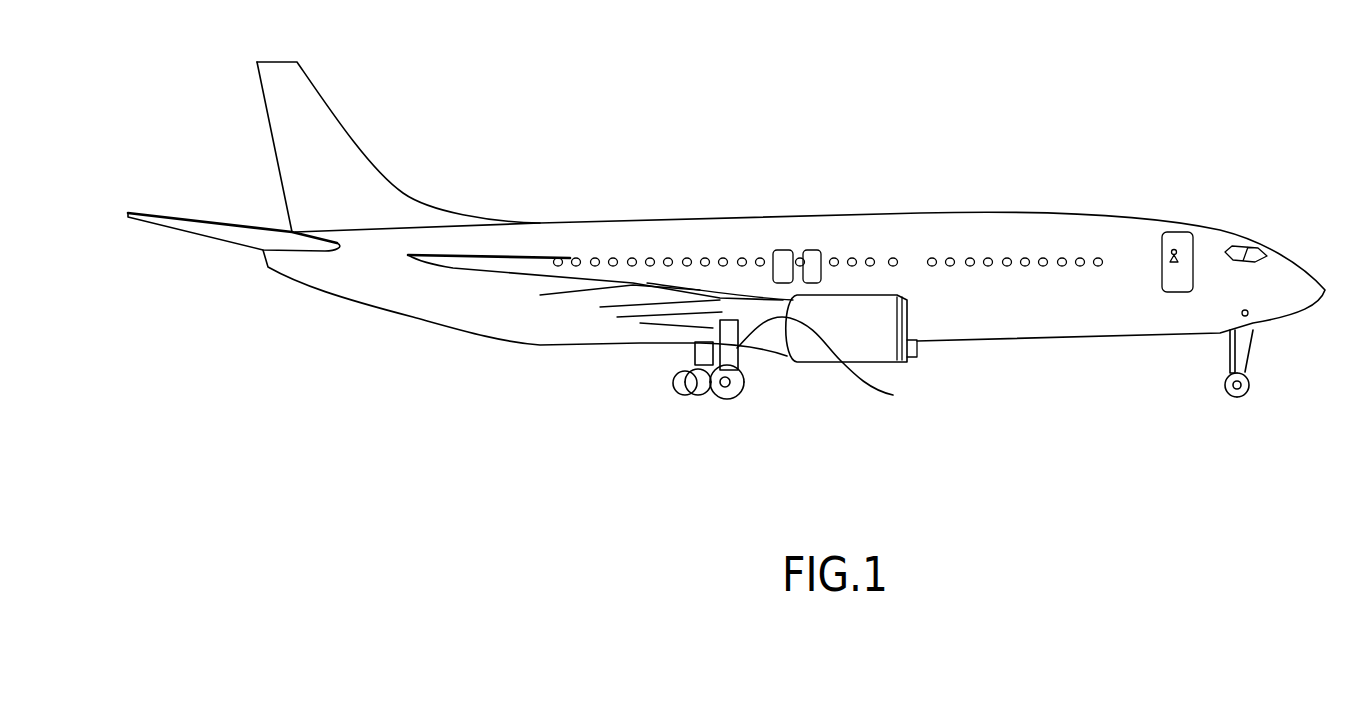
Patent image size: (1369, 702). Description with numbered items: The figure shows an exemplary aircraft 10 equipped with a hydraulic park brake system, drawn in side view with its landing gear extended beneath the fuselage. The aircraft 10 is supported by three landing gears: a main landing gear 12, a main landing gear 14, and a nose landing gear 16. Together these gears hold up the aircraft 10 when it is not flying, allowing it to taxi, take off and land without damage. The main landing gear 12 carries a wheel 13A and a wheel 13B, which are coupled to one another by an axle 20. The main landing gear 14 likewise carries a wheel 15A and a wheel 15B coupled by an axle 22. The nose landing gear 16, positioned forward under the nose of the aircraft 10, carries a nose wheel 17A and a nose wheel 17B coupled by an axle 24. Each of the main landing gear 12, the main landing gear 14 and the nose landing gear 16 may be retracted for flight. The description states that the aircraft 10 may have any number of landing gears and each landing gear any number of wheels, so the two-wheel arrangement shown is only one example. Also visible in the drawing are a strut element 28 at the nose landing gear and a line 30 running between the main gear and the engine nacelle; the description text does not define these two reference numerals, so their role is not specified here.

The aircraft 10 is at (905, 113).
The main landing gear 12 is at (683, 360).
The wheel 13A is at (687, 373).
The wheel 13B is at (688, 398).
The main landing gear 14 is at (750, 395).
The wheel 15A is at (744, 381).
The wheel 15B is at (700, 407).
The nose landing gear 16 is at (1267, 370).
The nose wheel 17A is at (1227, 383).
The nose wheel 17B is at (1250, 387).
The axle 20 is at (683, 390).
The axle 22 is at (733, 397).
The axle 24 is at (1240, 393).
The nose gear strut 28 is at (1227, 340).
The hydraulic line 30 is at (831, 363).